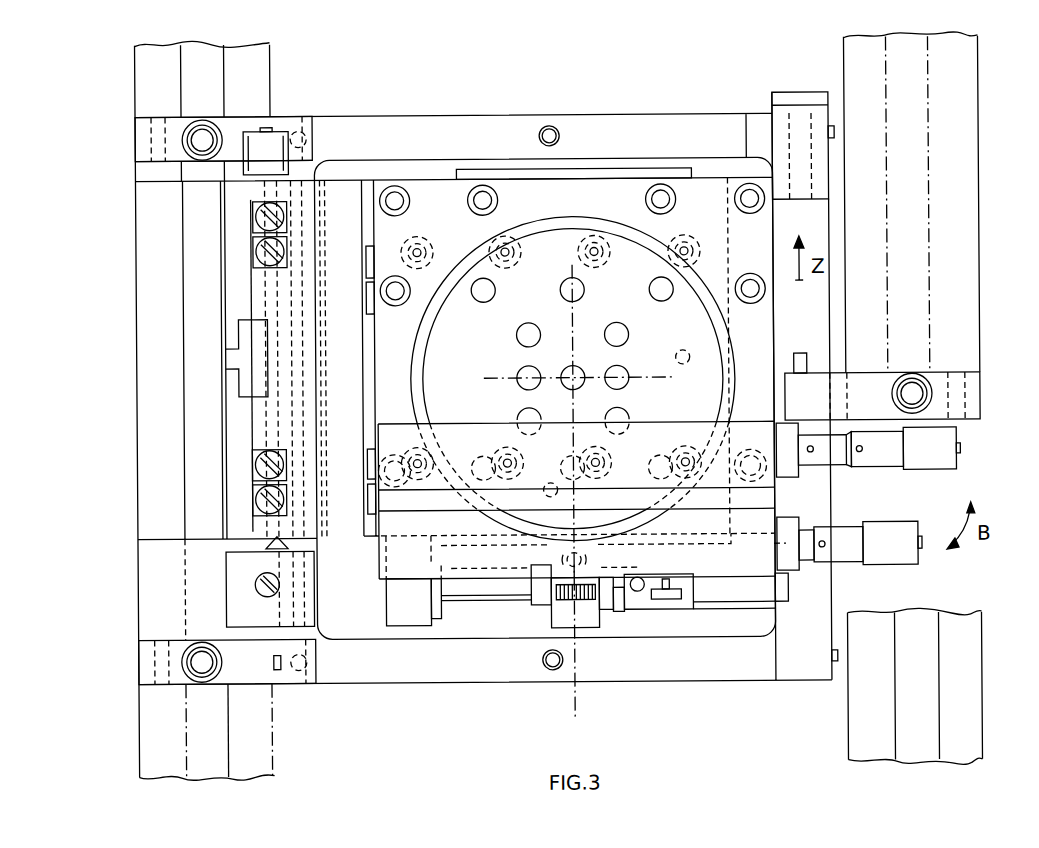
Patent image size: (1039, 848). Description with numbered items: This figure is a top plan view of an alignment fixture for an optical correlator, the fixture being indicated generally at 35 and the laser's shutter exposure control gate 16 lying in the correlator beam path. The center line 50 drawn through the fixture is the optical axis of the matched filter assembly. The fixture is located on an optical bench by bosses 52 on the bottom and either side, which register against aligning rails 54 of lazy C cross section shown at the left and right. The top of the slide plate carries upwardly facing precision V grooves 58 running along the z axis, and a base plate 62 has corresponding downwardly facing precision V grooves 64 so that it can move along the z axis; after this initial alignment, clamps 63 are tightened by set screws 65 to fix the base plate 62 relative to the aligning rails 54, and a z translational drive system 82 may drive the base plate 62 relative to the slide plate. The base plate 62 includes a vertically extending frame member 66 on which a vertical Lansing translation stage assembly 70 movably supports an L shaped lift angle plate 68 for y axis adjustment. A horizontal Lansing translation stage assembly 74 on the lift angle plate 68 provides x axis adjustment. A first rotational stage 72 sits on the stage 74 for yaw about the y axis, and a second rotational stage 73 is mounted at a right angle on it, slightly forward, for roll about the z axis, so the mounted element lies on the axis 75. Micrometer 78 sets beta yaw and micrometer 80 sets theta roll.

The shutter exposure control gate 16 is at (789, 583).
The positioning stage assembly 35 is at (546, 98).
The center line 50 is at (574, 702).
The bosses 52 is at (837, 134).
The aligning rails 54 is at (272, 749).
The precision V grooves 58 is at (308, 180).
The base plate 62 is at (442, 668).
The clamps 63 is at (137, 136).
The downwardly facing precision V grooves 64 is at (306, 626).
The set screws 65 is at (202, 119).
The vertically extending frame member 66 is at (189, 364).
The L shaped lift angle plate 68 is at (328, 361).
The vertical Lansing translation stage assembly 70 is at (280, 333).
The first rotational stage 72 is at (382, 341).
The second rotational stage 73 is at (447, 451).
The horizontal Lansing translation stage assembly 74 is at (393, 611).
The axis 75 is at (653, 377).
The micrometer 78 is at (898, 524).
The micrometer 80 is at (938, 471).
The z translational drive system 82 is at (800, 94).